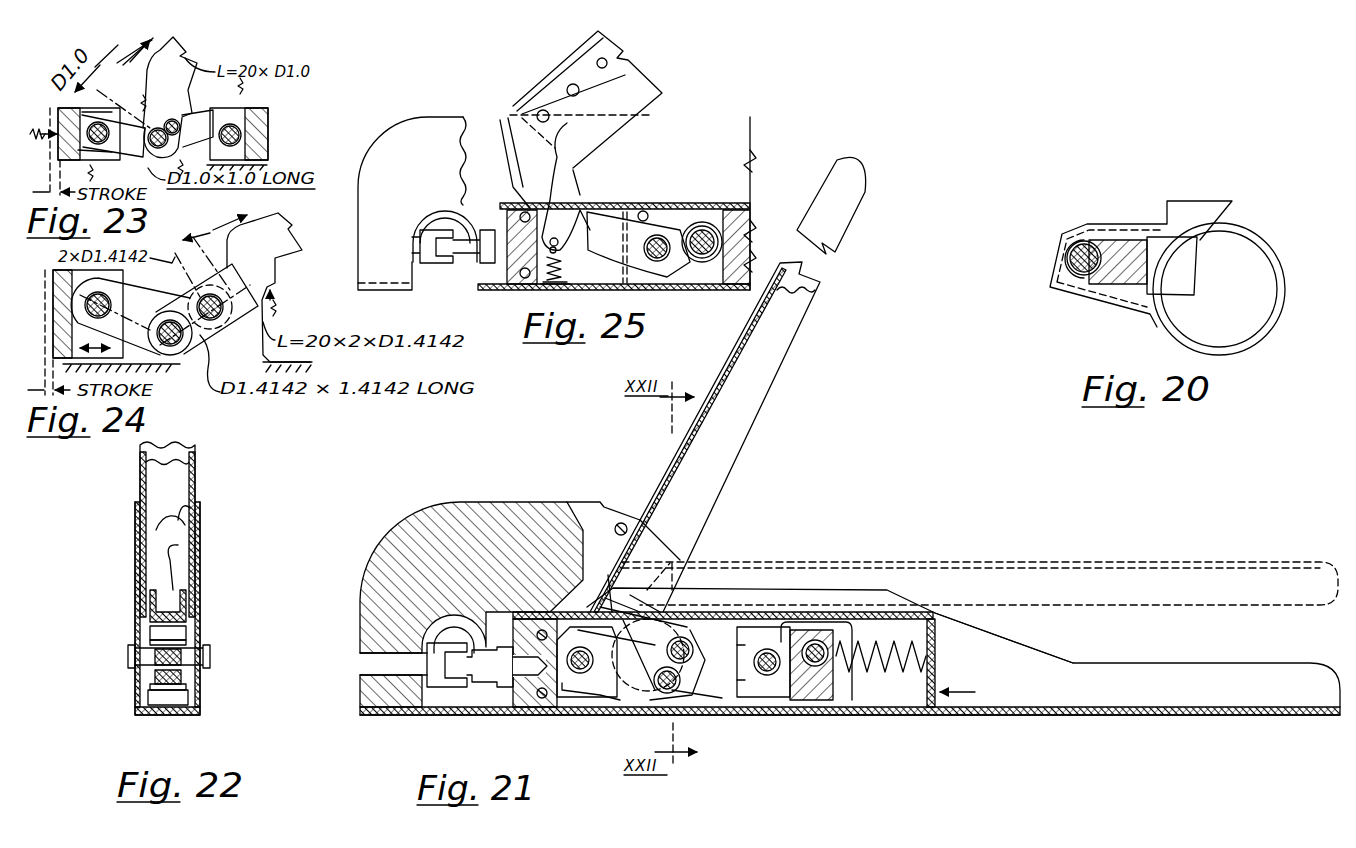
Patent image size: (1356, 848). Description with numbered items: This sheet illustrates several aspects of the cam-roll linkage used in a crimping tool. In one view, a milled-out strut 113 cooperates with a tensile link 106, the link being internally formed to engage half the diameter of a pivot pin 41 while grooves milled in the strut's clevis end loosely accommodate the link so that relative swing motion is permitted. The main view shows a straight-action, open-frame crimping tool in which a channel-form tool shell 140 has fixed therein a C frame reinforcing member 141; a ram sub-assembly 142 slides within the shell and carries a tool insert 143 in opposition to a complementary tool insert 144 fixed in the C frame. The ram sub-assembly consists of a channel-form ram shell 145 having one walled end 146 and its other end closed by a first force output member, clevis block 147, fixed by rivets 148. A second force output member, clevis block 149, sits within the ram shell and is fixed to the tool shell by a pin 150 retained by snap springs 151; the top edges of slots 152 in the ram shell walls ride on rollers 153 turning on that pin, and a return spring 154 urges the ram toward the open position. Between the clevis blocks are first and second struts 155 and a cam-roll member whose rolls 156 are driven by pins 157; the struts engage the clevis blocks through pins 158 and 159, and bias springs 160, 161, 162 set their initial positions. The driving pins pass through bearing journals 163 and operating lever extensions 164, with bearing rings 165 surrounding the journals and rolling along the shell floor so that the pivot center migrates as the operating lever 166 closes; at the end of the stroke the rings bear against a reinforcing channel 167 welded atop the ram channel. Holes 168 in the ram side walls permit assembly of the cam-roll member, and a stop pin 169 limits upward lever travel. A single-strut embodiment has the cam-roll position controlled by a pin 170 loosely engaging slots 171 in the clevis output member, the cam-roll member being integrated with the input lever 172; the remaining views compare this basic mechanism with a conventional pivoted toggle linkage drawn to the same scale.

In FIG. 20, the pivot pin 41 is at (1062, 247).
In FIG. 20, the link 106 is at (1247, 238).
In FIG. 20, the strut 113 is at (1197, 279).
In FIG. 22, the tool shell 140 is at (203, 503).
In FIG. 21, the tool shell 140 is at (578, 500).
In FIG. 21, the C frame reinforcing member 141 is at (452, 574).
In FIG. 21, the ram sub-assembly 142 is at (945, 693).
In FIG. 21, the tool insert 143 is at (478, 687).
In FIG. 21, the complementary tool insert 144 is at (443, 688).
In FIG. 22, the ram shell 145 is at (205, 712).
In FIG. 21, the ram shell 145 is at (922, 715).
In FIG. 21, the walled end 146 is at (944, 688).
In FIG. 21, the clevis block 147 is at (500, 708).
In FIG. 21, the rivets 148 is at (553, 712).
In FIG. 21, the clevis block 149 is at (760, 703).
In FIG. 22, the pin 150 is at (206, 652).
In FIG. 21, the pin 150 is at (815, 700).
In FIG. 22, the snap springs 151 is at (200, 635).
In FIG. 21, the slots 152 is at (840, 697).
In FIG. 21, the rollers 153 is at (805, 700).
In FIG. 21, the return spring 154 is at (936, 623).
In FIG. 21, the struts 155 is at (595, 690).
In FIG. 22, the rolls 156 is at (150, 618).
In FIG. 21, the rolls 156 is at (688, 640).
In FIG. 22, the pins 157 is at (192, 690).
In FIG. 21, the pins 157 is at (676, 672).
In FIG. 21, the pin 158 is at (593, 690).
In FIG. 21, the pin 159 is at (737, 687).
In FIG. 21, the bias spring 160 is at (600, 700).
In FIG. 21, the bias spring 161 is at (668, 605).
In FIG. 21, the bias spring 162 is at (931, 712).
In FIG. 22, the bearing journals 163 is at (200, 676).
In FIG. 21, the bearing journals 163 is at (712, 608).
In FIG. 22, the operating lever extensions 164 is at (188, 524).
In FIG. 21, the operating lever extensions 164 is at (660, 585).
In FIG. 22, the bearing rings 165 is at (172, 705).
In FIG. 21, the bearing rings 165 is at (695, 608).
In FIG. 22, the operating lever 166 is at (198, 452).
In FIG. 21, the operating lever 166 is at (797, 326).
In FIG. 22, the reinforcing channel 167 is at (186, 560).
In FIG. 21, the reinforcing channel 167 is at (813, 597).
In FIG. 22, the holes 168 is at (193, 660).
In FIG. 21, the stop pin 169 is at (608, 512).
In FIG. 25, the pin 170 is at (567, 203).
In FIG. 25, the slots 171 is at (600, 210).
In FIG. 25, the input lever 172 is at (548, 188).